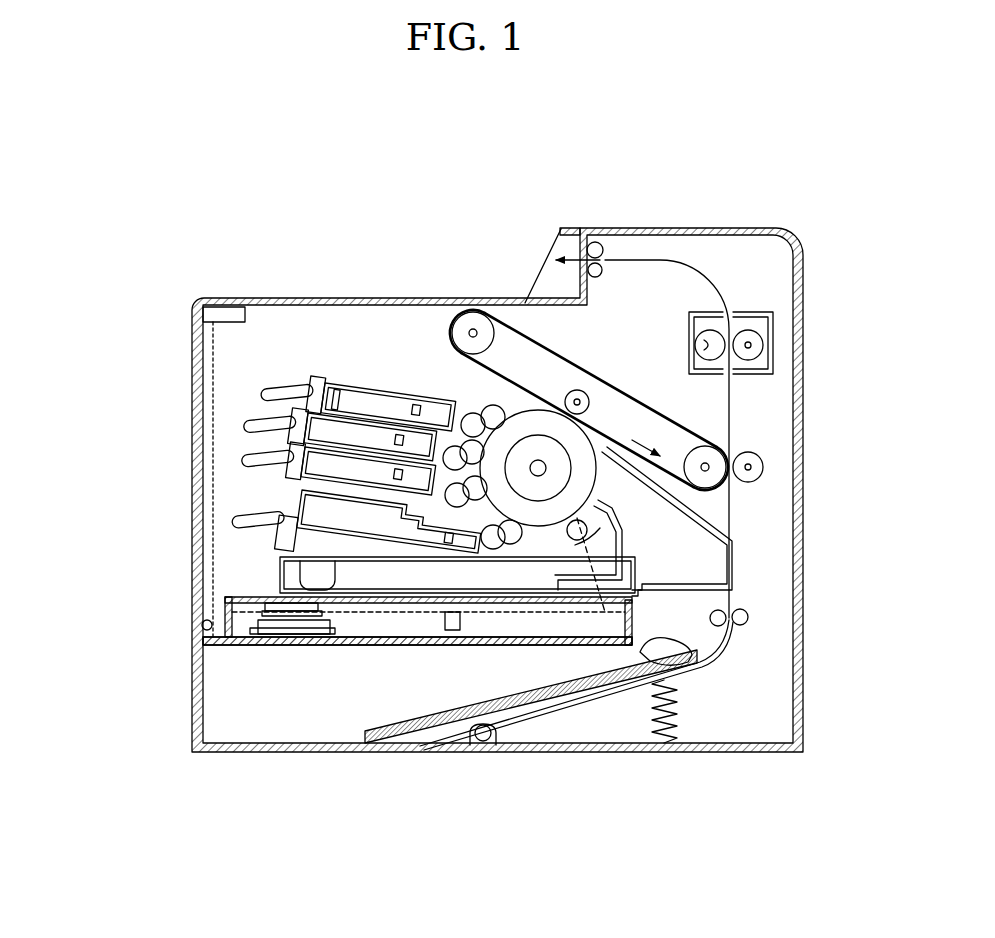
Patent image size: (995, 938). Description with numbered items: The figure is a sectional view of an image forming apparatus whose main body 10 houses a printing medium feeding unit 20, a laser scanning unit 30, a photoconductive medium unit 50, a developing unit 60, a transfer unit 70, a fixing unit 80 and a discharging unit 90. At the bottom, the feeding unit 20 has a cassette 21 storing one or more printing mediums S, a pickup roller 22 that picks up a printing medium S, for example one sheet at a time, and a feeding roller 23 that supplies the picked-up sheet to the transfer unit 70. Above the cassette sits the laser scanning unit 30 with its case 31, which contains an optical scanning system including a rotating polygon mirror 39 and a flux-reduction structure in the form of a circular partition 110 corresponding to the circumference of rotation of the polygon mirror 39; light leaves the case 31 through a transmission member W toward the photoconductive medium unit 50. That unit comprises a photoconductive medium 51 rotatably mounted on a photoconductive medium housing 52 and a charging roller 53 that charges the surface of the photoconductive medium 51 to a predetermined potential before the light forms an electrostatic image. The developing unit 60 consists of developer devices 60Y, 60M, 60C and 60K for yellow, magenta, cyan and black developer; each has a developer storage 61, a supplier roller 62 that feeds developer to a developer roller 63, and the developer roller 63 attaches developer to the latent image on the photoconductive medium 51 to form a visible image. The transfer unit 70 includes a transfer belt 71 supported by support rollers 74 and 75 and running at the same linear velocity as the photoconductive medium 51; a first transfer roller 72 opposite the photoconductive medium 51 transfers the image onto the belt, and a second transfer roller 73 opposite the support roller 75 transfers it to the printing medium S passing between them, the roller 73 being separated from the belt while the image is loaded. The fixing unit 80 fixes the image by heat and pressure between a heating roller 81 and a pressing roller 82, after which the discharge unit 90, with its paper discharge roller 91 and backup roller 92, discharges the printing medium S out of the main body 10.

The main body 10 is at (789, 216).
The printing medium feeding unit 20 is at (487, 710).
The cassette 21 is at (262, 753).
The pickup roller 22 is at (712, 661).
The feeding roller 23 is at (745, 610).
The laser scanning unit 30 is at (349, 615).
The case 31 is at (355, 646).
The polygon mirror 39 is at (258, 613).
The circular partition 110 is at (258, 628).
The transmission member W is at (578, 622).
The printing medium S is at (474, 718).
The photoconductive medium unit 50 is at (706, 536).
The photoconductive medium 51 is at (513, 416).
The photoconductive medium housing 52 is at (636, 600).
The charging roller 53 is at (622, 538).
The developing unit 60 is at (422, 453).
The developer device 60Y is at (371, 387).
The developer device 60M is at (288, 433).
The developer device 60C is at (290, 478).
The developer device 60K is at (282, 538).
The developer storage 61 is at (328, 392).
The supplier roller 62 is at (452, 401).
The developer roller 63 is at (485, 408).
The transfer unit 70 is at (589, 398).
The transfer belt 71 is at (635, 400).
The first transfer roller 72 is at (580, 390).
The second transfer roller 73 is at (765, 466).
The support roller 74 is at (497, 328).
The support roller 75 is at (697, 446).
The fixing unit 80 is at (754, 348).
The heating roller 81 is at (706, 330).
The pressing roller 82 is at (752, 361).
The discharge unit 90 is at (595, 237).
The paper discharge roller 91 is at (590, 244).
The backup roller 92 is at (600, 278).